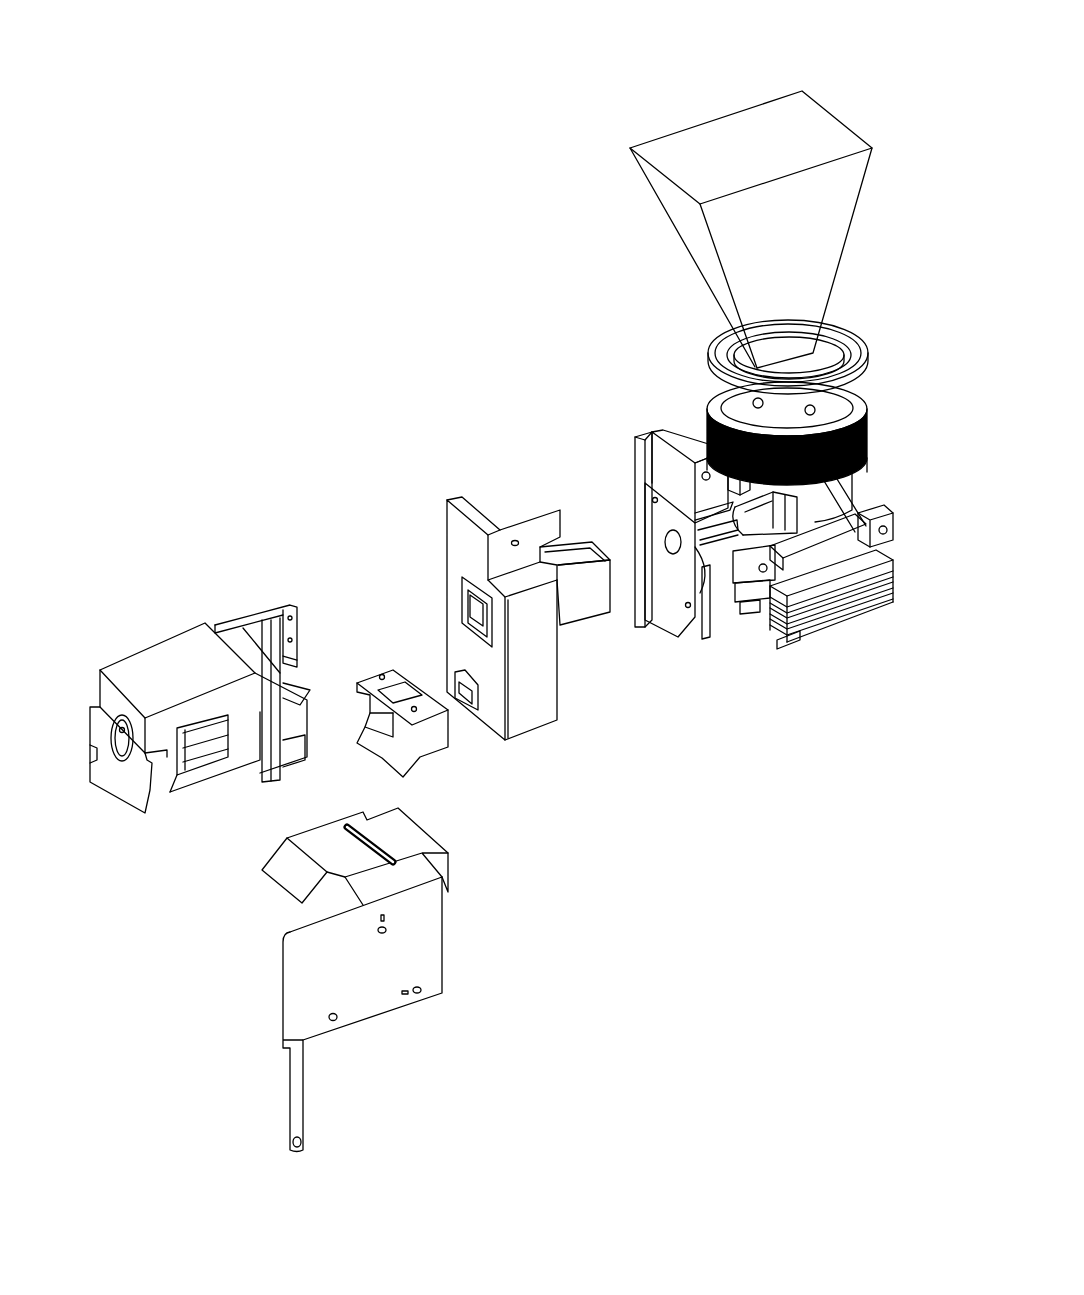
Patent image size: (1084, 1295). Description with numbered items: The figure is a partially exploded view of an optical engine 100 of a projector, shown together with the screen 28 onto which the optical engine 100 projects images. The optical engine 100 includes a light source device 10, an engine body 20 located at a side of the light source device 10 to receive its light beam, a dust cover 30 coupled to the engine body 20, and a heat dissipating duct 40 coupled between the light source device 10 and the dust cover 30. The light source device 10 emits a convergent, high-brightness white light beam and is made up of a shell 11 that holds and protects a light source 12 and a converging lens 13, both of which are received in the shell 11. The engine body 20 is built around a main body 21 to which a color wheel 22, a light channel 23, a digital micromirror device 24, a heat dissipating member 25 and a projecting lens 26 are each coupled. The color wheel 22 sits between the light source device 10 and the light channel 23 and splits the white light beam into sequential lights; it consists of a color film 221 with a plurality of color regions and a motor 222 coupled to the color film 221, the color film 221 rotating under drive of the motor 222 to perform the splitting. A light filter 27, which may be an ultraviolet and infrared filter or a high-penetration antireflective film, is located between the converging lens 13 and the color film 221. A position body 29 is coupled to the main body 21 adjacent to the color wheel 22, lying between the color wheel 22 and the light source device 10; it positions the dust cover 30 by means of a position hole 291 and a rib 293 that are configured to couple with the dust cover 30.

The optical engine 100 is at (343, 148).
The light source device 10 is at (168, 627).
The shell 11 is at (152, 655).
The light source 12 is at (123, 745).
The converging lens 13 is at (265, 650).
The engine body 20 is at (675, 350).
The main body 21 is at (857, 482).
The color wheel 22 is at (785, 700).
The color film 221 is at (700, 590).
The motor 222 is at (738, 608).
The light channel 23 is at (773, 547).
The digital micromirror device 24 is at (850, 550).
The heat dissipating member 25 is at (807, 617).
The projecting lens 26 is at (842, 405).
The light filter 27 is at (483, 607).
The screen 28 is at (733, 145).
The position body 29 is at (702, 455).
The position hole 291 is at (700, 478).
The rib 293 is at (637, 565).
The dust cover 30 is at (526, 769).
The heat dissipating duct 40 is at (422, 742).